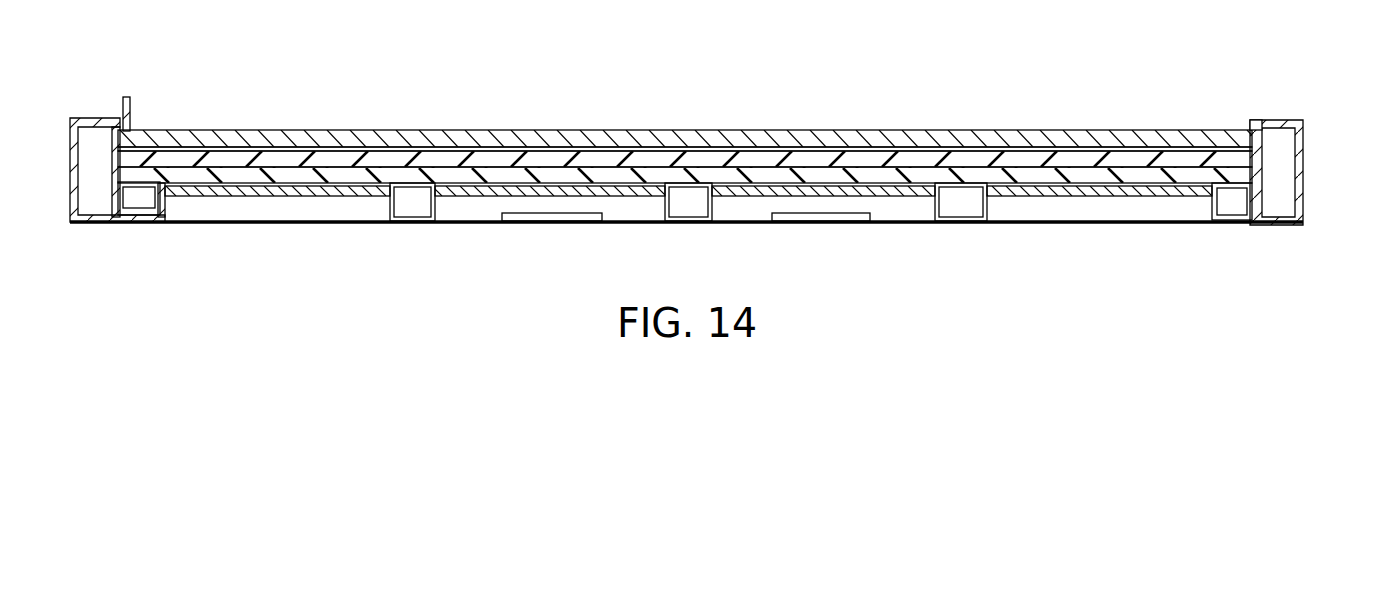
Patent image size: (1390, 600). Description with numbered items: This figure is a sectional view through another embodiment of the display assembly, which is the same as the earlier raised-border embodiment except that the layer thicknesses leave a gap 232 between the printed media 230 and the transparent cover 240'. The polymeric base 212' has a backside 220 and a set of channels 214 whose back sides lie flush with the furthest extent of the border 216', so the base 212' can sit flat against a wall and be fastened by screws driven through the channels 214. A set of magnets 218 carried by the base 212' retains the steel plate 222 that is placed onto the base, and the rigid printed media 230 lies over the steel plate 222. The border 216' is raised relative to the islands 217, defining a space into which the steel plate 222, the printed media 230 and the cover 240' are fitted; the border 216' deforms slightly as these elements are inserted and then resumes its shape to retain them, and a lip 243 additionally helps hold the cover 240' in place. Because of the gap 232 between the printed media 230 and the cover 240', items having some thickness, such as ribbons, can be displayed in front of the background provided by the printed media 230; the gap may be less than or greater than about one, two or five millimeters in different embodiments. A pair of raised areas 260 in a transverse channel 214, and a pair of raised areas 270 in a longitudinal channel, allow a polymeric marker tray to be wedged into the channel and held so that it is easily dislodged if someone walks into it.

The printed media 230 is at (254, 160).
The steel plate 222 is at (340, 172).
The transparent cover 240' is at (685, 110).
The gap 232 is at (782, 150).
The lip 243 is at (1250, 123).
The border 216' is at (1316, 169).
The raised areas 260 is at (138, 218).
The islands 217 is at (263, 198).
The channels 214 is at (415, 218).
The backside 220 is at (533, 196).
The base 212' is at (832, 233).
The raised areas 270 is at (822, 221).
The magnets 218 is at (1106, 198).